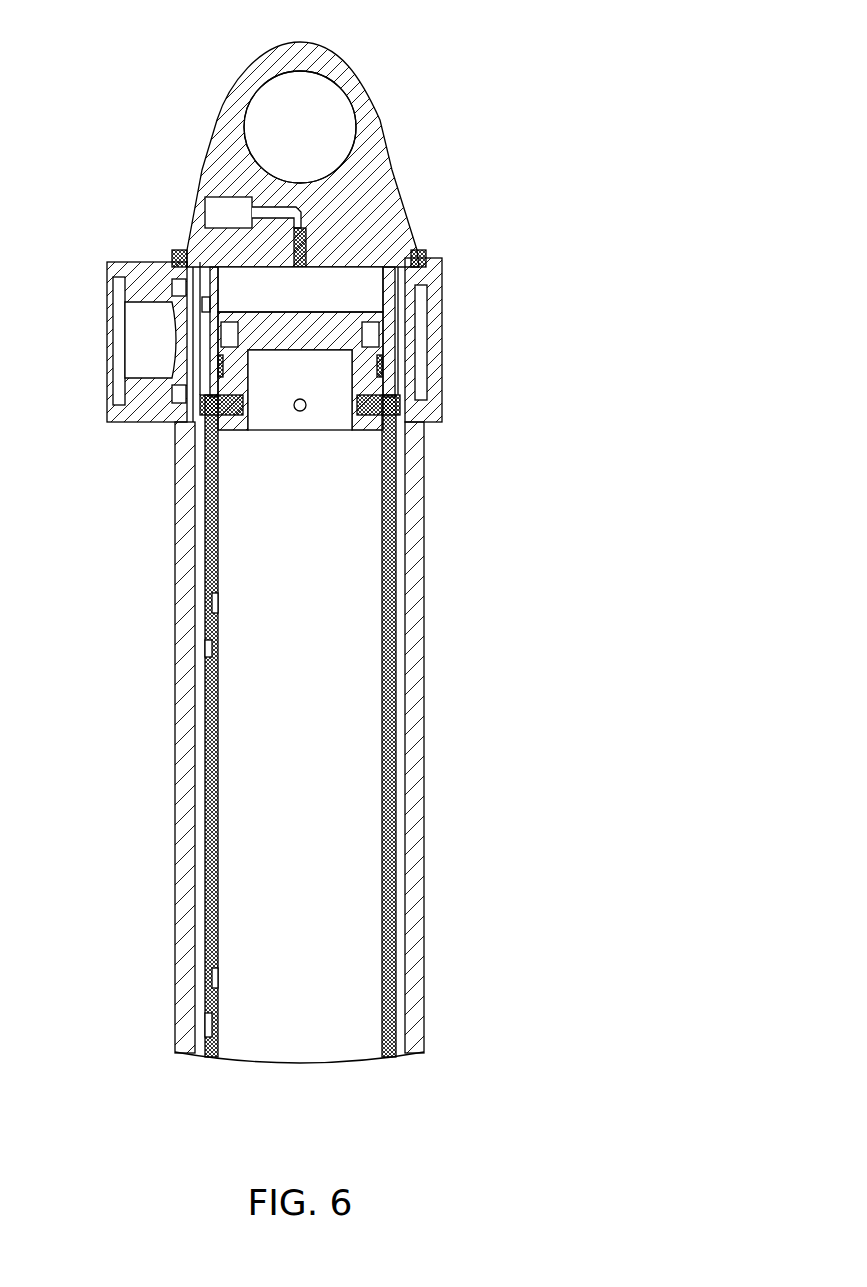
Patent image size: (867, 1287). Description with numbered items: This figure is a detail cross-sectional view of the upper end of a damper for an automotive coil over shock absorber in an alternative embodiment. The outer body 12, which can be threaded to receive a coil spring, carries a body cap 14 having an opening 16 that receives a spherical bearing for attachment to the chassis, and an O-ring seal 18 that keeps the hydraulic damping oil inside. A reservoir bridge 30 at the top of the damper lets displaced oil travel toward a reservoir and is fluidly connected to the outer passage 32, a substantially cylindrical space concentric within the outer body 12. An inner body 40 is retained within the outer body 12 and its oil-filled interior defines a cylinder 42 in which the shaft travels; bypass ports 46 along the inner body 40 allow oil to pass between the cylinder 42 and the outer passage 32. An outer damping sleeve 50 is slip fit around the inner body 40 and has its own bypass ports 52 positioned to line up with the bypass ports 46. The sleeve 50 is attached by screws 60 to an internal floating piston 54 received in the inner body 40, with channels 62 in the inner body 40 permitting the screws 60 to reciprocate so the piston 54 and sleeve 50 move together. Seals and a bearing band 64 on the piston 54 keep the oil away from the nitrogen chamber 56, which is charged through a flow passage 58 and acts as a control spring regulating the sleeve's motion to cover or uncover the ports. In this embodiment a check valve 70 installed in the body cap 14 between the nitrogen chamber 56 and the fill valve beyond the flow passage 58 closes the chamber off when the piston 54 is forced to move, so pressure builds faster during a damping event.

The outer body 12 is at (294, 742).
The body cap 14 is at (378, 130).
The opening 16 is at (312, 95).
The O-ring seal 18 is at (422, 257).
The reservoir bridge 30 is at (118, 272).
The outer passage 32 is at (195, 522).
The inner body 40 is at (380, 568).
The cylinder 42 is at (287, 825).
The bypass ports 46 is at (218, 605).
The outer damping sleeve 50 is at (388, 692).
The bypass ports 52 is at (208, 656).
The internal floating piston 54 is at (345, 324).
The nitrogen chamber 56 is at (283, 303).
The flow passage 58 is at (205, 212).
The screws 60 is at (210, 410).
The channels 62 is at (213, 352).
The bearing band 64 is at (212, 385).
The check valve 70 is at (305, 230).